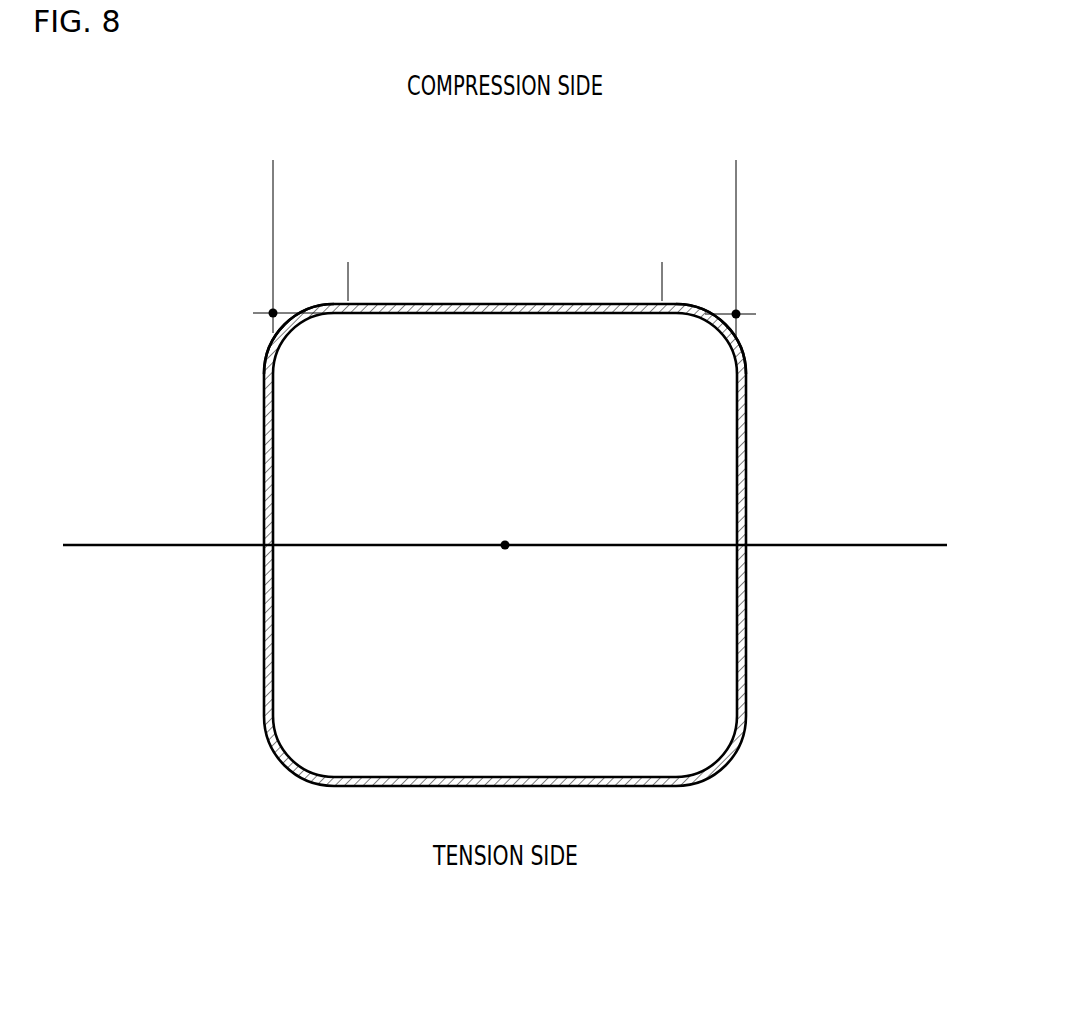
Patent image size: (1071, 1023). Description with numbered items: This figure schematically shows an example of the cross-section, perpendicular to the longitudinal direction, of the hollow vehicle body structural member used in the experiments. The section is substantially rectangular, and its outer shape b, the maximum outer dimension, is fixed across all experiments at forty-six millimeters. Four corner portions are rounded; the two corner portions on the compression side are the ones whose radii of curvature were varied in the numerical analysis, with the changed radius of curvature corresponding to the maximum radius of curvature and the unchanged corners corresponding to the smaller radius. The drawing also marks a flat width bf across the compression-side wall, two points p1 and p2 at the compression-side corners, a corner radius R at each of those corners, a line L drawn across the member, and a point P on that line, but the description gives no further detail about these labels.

The outer shape b is at (736, 170).
The flat portion width of compression side wall bf is at (662, 269).
The intersection point of inner wall surface extensions p1 is at (273, 313).
The intersection point of inner wall surface extensions p2 is at (736, 314).
The corner radius R is at (277, 318).
The neutral axis line L is at (493, 547).
The center point P is at (507, 543).